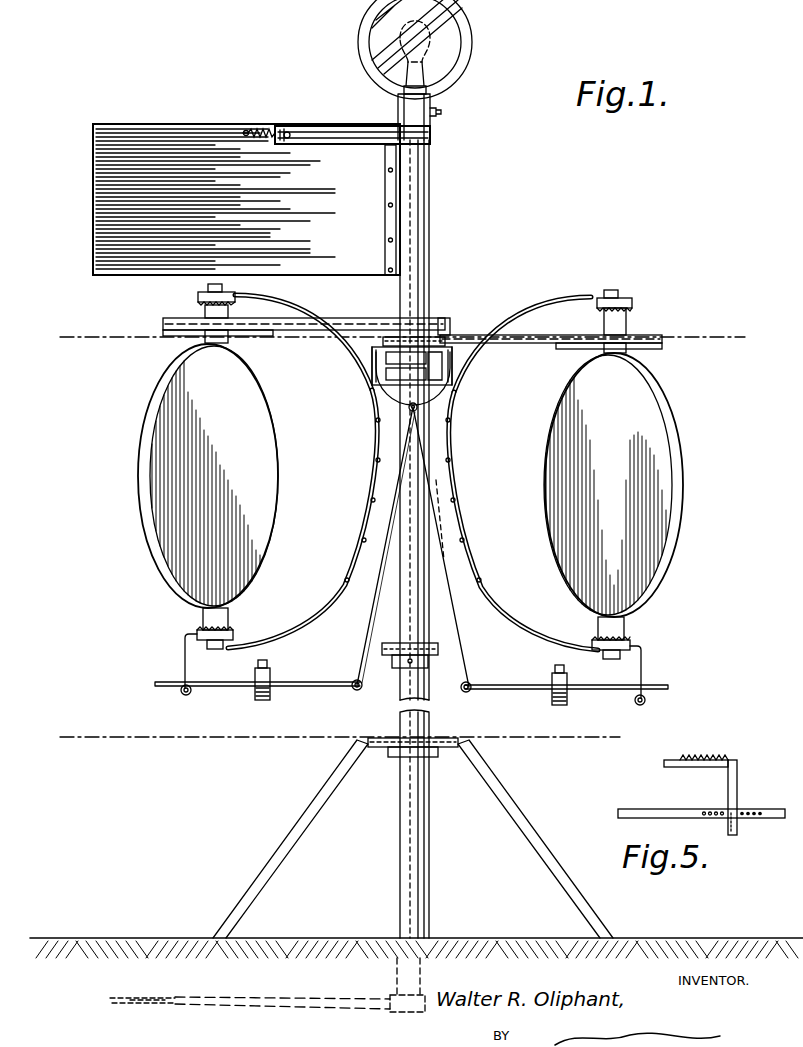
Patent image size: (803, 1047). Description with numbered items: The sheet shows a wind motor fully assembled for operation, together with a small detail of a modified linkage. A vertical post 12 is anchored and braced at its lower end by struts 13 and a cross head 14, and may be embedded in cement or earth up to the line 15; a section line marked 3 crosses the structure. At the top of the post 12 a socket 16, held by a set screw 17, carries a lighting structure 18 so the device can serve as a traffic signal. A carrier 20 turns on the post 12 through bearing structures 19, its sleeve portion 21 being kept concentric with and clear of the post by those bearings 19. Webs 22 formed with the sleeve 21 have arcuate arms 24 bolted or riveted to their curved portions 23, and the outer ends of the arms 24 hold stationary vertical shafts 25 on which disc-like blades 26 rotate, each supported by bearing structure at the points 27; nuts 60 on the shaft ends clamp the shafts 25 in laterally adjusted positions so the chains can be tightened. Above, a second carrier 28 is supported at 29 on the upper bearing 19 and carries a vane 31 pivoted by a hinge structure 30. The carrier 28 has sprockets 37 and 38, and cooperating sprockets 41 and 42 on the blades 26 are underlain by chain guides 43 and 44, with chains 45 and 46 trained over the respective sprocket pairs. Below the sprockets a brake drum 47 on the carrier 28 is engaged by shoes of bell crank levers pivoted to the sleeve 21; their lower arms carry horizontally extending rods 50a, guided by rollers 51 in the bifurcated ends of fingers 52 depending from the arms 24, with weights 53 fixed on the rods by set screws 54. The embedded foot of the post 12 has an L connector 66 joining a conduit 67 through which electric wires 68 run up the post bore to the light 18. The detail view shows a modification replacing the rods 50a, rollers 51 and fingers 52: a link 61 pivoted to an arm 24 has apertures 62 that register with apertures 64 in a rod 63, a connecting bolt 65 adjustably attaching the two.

In FIG. 1, the section line 3- 3 is at (747, 346).
In FIG. 1, the vertical post 12 is at (426, 829).
In FIG. 1, the struts 13 is at (298, 832).
In FIG. 1, the cross head 14 is at (372, 754).
In FIG. 1, the line 15 is at (232, 740).
In FIG. 1, the socket 16 is at (400, 106).
In FIG. 1, the set screw 17 is at (441, 113).
In FIG. 1, the lighting structure 18 is at (478, 42).
In FIG. 1, the bearing structures 19 is at (456, 372).
In FIG. 1, the carrier 20 is at (462, 498).
In FIG. 1, the sleeve portion 21 is at (386, 605).
In FIG. 1, the webs 22 is at (374, 572).
In FIG. 1, the curved portions 23 is at (457, 410).
In FIG. 1, the arcuate arms 24 is at (490, 600).
In FIG. 5, the arcuate arms 24 is at (668, 760).
In FIG. 1, the vertical shafts 25 is at (206, 290).
In FIG. 1, the disc-like blade 26 is at (410, 480).
In FIG. 1, the bearing structure 27 is at (172, 322).
In FIG. 1, the second carrier 28 is at (430, 225).
In FIG. 1, the support 29 is at (394, 386).
In FIG. 1, the hinge structure 30 is at (390, 200).
In FIG. 1, the vane 31 is at (174, 138).
In FIG. 1, the sprocket 37 is at (447, 326).
In FIG. 1, the sprocket 38 is at (385, 345).
In FIG. 1, the sprocket 41 is at (288, 311).
In FIG. 1, the sprocket 42 is at (666, 337).
In FIG. 1, the chain guide 43 is at (175, 333).
In FIG. 1, the chain guide 44 is at (666, 346).
In FIG. 1, the chain 45 is at (356, 318).
In FIG. 1, the chain 46 is at (482, 336).
In FIG. 1, the brake drum 47 is at (392, 370).
In FIG. 1, the horizontally extending rods 50a is at (300, 682).
In FIG. 1, the rollers 51 is at (190, 696).
In FIG. 1, the fingers 52 is at (185, 662).
In FIG. 1, the weights 53 is at (270, 700).
In FIG. 1, the set screws 54 is at (264, 664).
In FIG. 1, the nuts 60 is at (630, 298).
In FIG. 5, the link 61 is at (737, 778).
In FIG. 5, the apertures 62 is at (726, 828).
In FIG. 5, the rod 63 is at (660, 812).
In FIG. 5, the apertures 64 is at (748, 818).
In FIG. 5, the connecting bolt 65 is at (740, 812).
In FIG. 1, the L connector 66 is at (406, 1012).
In FIG. 1, the conduit 67 is at (312, 1000).
In FIG. 1, the electric wires 68 is at (138, 1000).